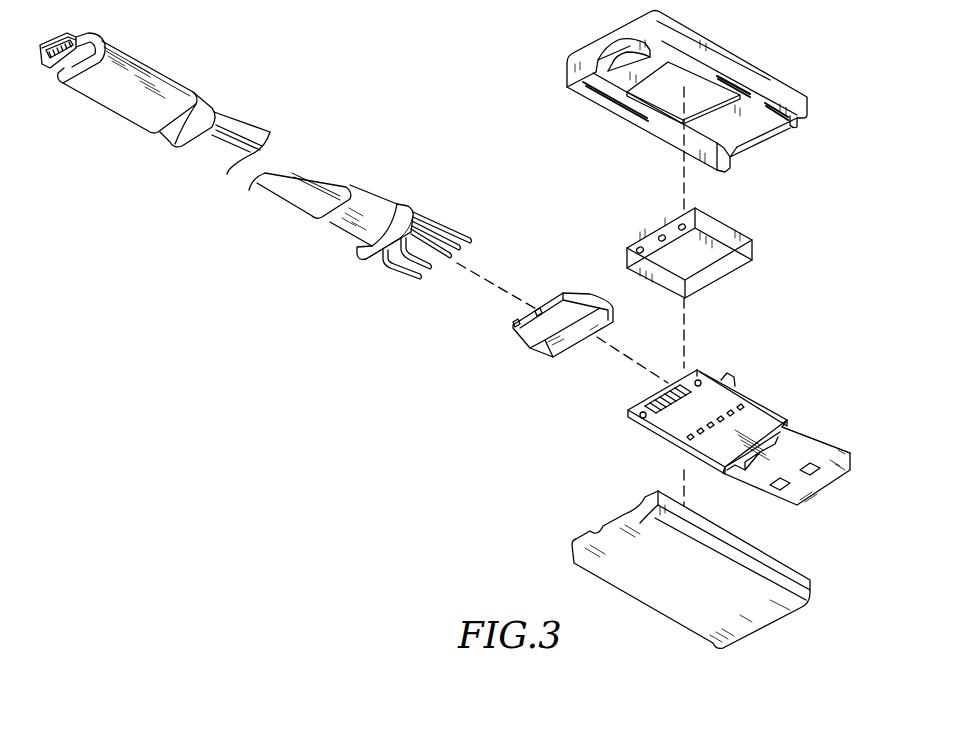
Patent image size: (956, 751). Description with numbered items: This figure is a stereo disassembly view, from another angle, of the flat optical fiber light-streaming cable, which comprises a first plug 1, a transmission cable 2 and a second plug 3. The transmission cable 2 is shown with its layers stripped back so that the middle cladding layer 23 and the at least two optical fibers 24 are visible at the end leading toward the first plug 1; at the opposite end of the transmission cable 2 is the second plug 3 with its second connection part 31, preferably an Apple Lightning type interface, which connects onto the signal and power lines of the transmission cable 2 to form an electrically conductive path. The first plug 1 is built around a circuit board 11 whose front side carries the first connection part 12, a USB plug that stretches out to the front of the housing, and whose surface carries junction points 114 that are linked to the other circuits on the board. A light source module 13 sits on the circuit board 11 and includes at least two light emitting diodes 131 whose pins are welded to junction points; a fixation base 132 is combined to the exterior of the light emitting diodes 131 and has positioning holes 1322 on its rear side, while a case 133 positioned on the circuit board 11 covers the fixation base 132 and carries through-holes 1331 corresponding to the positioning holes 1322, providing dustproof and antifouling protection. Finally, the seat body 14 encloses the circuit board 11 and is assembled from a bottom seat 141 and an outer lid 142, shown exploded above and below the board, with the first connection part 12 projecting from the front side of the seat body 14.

The first plug 1 is at (654, 330).
The transmission cable 2 is at (360, 219).
The second plug 3 is at (155, 103).
The second connection part 31 is at (45, 78).
The middle cladding layer 23 is at (405, 268).
The optical fibers 24 is at (442, 238).
The circuit board 11 is at (706, 406).
The first connection part 12 is at (842, 436).
The light source module 13 is at (629, 336).
The light emitting diodes 131 is at (728, 376).
The fixation base 132 is at (528, 342).
The positioning holes 1322 is at (513, 322).
The case 133 is at (695, 248).
The through-holes 1331 is at (638, 246).
The junction points 114 is at (658, 400).
The seat body 14 is at (650, 330).
The bottom seat 141 is at (585, 548).
The outer lid 142 is at (575, 58).